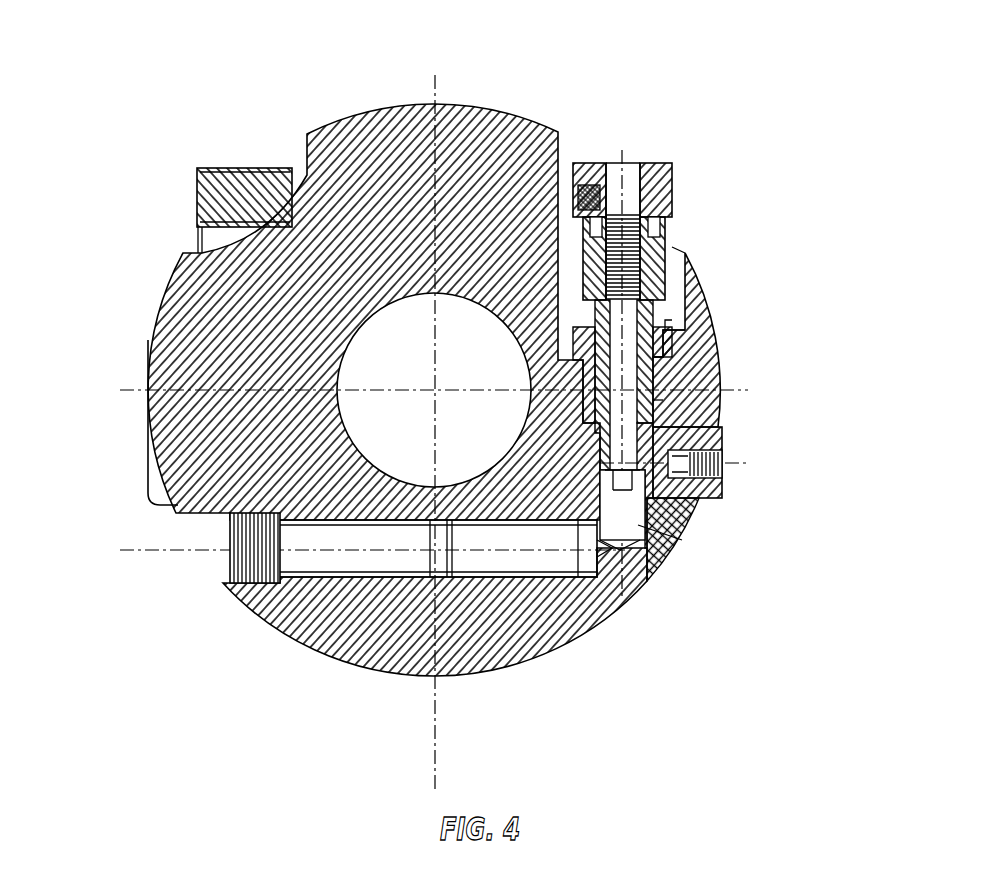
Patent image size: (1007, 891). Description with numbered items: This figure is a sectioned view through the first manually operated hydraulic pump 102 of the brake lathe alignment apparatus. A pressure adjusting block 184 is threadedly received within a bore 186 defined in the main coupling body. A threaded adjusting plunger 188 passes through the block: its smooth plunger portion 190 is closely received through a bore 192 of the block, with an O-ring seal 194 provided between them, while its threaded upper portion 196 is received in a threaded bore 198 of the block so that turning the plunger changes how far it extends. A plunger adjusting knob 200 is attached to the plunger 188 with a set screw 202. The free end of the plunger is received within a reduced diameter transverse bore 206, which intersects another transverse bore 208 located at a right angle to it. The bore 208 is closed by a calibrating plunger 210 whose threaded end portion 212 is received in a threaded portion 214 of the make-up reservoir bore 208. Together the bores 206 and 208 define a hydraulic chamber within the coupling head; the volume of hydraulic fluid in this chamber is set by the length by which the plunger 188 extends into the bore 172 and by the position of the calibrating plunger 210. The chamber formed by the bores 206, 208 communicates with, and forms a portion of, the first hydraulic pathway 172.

The first manually operated hydraulic pump 102 is at (667, 162).
The first hydraulic pathway 172 is at (622, 469).
The pressure adjusting block 184 is at (658, 318).
The bore 186 is at (683, 356).
The threaded adjusting plunger 188 is at (677, 543).
The smooth plunger portion 190 is at (630, 448).
The bore 192 is at (660, 392).
The O-ring seal 194 is at (665, 406).
The threaded upper portion 196 is at (668, 228).
The threaded bore 198 is at (706, 317).
The plunger adjusting knob 200 is at (670, 238).
The set screw 202 is at (578, 193).
The reduced diameter transverse bore 206 is at (668, 558).
The transverse bore 208 is at (508, 573).
The calibrating plunger 210 is at (313, 563).
The threaded end portion 212 is at (235, 548).
The threaded portion 214 is at (363, 583).